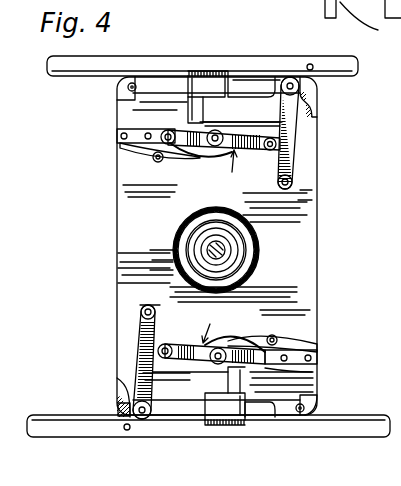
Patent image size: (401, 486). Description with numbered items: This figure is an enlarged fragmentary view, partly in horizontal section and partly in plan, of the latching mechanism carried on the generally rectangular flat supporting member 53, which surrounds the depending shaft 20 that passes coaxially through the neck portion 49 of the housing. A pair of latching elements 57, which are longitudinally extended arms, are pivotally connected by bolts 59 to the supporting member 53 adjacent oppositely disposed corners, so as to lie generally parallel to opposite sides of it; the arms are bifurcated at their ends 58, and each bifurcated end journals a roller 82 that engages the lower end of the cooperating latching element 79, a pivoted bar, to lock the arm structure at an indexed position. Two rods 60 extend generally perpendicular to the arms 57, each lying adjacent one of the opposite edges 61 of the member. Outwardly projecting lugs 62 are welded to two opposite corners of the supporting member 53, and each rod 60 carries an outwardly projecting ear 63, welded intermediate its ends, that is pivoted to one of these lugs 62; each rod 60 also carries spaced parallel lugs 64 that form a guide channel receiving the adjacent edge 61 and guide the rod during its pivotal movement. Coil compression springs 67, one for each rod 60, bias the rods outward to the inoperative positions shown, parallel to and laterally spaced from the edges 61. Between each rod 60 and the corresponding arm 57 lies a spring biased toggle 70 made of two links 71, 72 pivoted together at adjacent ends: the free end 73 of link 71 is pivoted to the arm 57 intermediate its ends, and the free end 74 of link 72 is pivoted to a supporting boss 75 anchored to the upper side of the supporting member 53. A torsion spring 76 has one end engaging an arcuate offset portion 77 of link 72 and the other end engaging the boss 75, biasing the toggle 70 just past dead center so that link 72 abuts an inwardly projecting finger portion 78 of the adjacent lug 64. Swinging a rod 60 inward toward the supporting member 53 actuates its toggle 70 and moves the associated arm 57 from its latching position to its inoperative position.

The depending shaft 20 is at (222, 246).
The neck portion 49 is at (260, 258).
The supporting member 53 is at (137, 242).
The latching elements 57 is at (300, 130).
The bifurcated ends 58 is at (312, 97).
The bolts 59 is at (292, 182).
The rods 60 is at (63, 73).
The edges 61 is at (243, 90).
The lugs 62 is at (134, 82).
The ears 63 is at (115, 85).
The lugs 64 is at (203, 78).
The coil compression springs 67 is at (308, 77).
The spring biased toggles 70 is at (221, 246).
The link 71 is at (247, 122).
The link 72 is at (212, 150).
The free end 73 is at (268, 151).
The free end 74 is at (175, 154).
The supporting boss 75 is at (128, 128).
The torsion springs 76 is at (143, 152).
The arcuate offset portion 77 is at (200, 163).
The finger portion 78 is at (186, 123).
The latching element 79 is at (117, 418).
The roller 82 is at (283, 77).